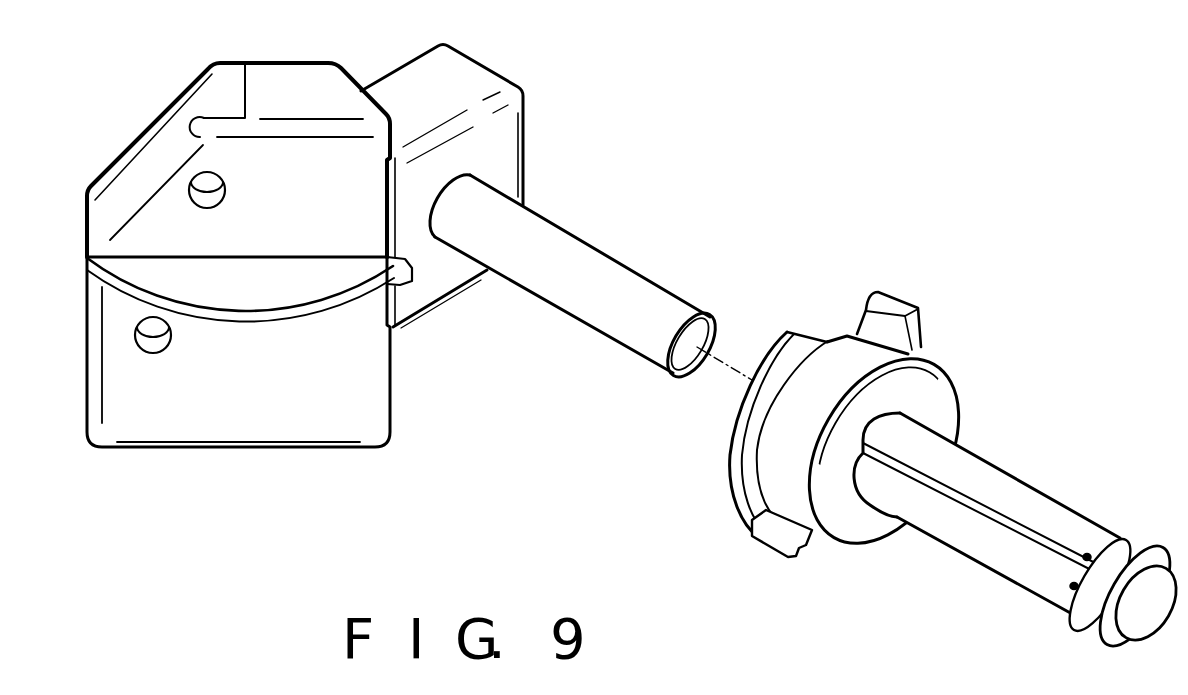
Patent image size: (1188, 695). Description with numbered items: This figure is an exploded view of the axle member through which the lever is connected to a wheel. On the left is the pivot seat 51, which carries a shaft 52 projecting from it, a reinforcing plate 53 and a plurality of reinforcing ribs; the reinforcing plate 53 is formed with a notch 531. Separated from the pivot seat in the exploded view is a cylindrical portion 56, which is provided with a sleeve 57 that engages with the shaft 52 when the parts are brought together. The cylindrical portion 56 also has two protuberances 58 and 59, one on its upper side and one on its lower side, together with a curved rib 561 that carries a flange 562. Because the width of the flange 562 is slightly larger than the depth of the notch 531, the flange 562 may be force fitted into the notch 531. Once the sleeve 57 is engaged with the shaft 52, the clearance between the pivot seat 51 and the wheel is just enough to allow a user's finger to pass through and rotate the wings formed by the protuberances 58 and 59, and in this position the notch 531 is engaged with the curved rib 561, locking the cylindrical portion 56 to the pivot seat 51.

The pivot seat 51 is at (315, 82).
The shaft 52 is at (532, 246).
The reinforcing plate 53 is at (303, 295).
The notch 531 is at (405, 284).
The cylindrical portion 56 is at (871, 525).
The curved rib 561 is at (745, 478).
The flange 562 is at (758, 405).
The sleeve 57 is at (977, 543).
The protuberance 58 is at (752, 533).
The protuberance 59 is at (920, 313).